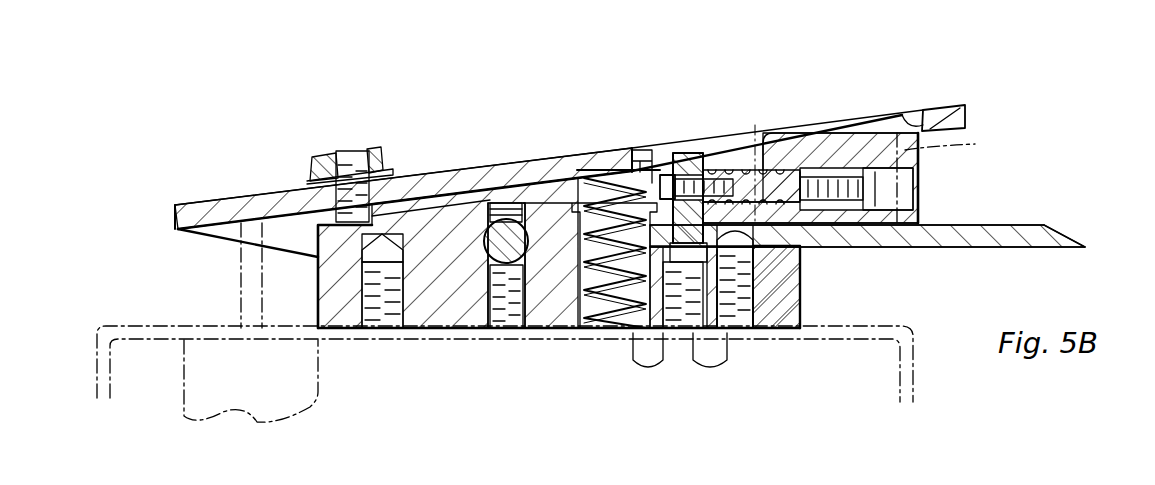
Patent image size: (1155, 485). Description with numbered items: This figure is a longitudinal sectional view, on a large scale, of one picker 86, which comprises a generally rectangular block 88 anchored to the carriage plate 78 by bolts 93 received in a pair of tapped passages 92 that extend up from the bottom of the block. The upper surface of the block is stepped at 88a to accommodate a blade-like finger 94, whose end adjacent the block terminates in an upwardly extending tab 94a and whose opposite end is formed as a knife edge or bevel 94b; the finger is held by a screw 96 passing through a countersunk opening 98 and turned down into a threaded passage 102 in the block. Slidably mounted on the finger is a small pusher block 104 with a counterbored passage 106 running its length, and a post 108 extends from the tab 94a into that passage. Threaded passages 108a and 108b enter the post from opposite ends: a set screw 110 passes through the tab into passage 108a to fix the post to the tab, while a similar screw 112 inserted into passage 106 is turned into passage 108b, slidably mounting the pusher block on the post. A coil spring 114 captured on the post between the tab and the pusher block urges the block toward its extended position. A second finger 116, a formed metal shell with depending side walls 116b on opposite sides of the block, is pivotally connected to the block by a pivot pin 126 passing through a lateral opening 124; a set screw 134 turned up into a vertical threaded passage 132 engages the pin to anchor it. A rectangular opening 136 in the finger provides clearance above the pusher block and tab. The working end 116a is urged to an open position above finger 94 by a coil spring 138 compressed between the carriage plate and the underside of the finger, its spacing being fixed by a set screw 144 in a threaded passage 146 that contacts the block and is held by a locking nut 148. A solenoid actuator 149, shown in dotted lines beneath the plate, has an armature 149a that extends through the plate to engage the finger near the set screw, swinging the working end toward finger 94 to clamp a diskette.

The carriage plate 78 is at (915, 337).
The picker 86 is at (240, 155).
The block 88 is at (345, 318).
The step 88a is at (792, 250).
The tapped passages 92 is at (399, 298).
The bolts 93 is at (655, 370).
The finger 94 is at (1037, 246).
The tab 94a is at (690, 168).
The knife edge or bevel 94b is at (1083, 242).
The screw 96 is at (770, 288).
The countersunk opening 98 is at (790, 333).
The threaded passage 102 is at (742, 318).
The pusher block 104 is at (957, 177).
The passage 106 is at (852, 180).
The post 108 is at (770, 136).
The threaded passage 108a is at (701, 182).
The threaded passage 108b is at (812, 186).
The set screw 110 is at (646, 165).
The screw 112 is at (882, 192).
The coil spring 114 is at (745, 178).
The second finger 116 is at (453, 172).
The working end 116a is at (967, 112).
The side walls 116b is at (298, 240).
The lateral opening 124 is at (498, 206).
The pivot pin 126 is at (528, 224).
The vertical threaded passage 132 is at (511, 312).
The set screw 134 is at (490, 276).
The rectangular opening 136 is at (908, 122).
The coil spring 138 is at (625, 300).
The set screw 144 is at (351, 196).
The threaded passage 146 is at (322, 162).
The locking nut 148 is at (384, 165).
The solenoid actuator 149 is at (184, 386).
The armature 149a is at (241, 262).